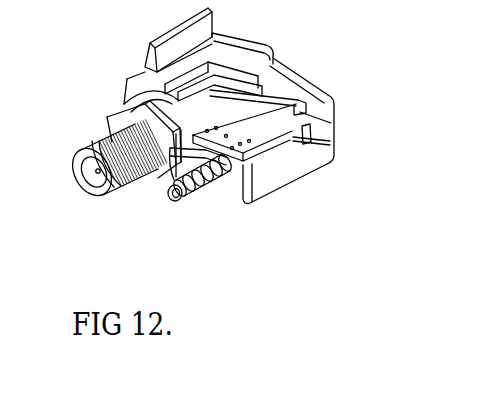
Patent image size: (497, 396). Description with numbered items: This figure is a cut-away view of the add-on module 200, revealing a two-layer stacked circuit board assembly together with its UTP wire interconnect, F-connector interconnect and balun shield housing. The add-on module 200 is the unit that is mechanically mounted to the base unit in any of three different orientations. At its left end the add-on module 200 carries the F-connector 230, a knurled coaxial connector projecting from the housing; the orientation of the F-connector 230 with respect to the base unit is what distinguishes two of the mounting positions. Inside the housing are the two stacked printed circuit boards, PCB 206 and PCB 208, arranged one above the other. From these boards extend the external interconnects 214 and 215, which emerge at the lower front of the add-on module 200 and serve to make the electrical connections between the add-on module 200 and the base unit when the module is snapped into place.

The add-on module 200 is at (118, 78).
The PCB 206 is at (277, 87).
The PCB 208 is at (247, 142).
The external interconnect 214 is at (174, 199).
The external interconnect 215 is at (185, 199).
The F-connector 230 is at (91, 143).